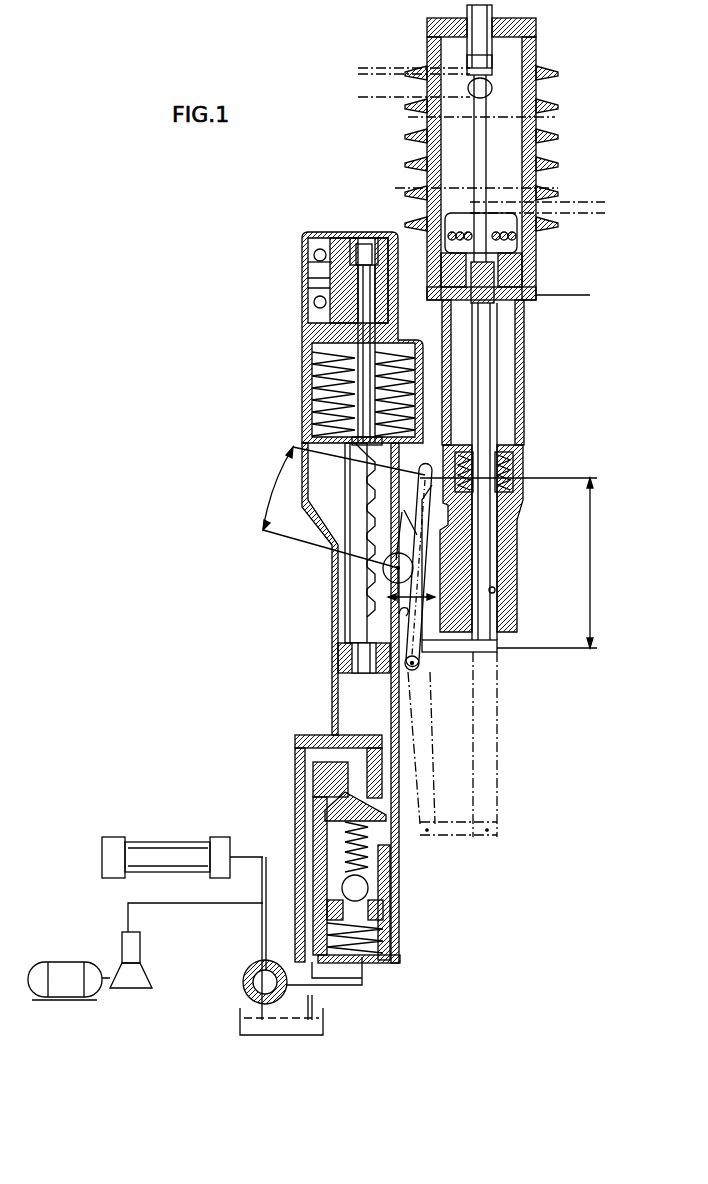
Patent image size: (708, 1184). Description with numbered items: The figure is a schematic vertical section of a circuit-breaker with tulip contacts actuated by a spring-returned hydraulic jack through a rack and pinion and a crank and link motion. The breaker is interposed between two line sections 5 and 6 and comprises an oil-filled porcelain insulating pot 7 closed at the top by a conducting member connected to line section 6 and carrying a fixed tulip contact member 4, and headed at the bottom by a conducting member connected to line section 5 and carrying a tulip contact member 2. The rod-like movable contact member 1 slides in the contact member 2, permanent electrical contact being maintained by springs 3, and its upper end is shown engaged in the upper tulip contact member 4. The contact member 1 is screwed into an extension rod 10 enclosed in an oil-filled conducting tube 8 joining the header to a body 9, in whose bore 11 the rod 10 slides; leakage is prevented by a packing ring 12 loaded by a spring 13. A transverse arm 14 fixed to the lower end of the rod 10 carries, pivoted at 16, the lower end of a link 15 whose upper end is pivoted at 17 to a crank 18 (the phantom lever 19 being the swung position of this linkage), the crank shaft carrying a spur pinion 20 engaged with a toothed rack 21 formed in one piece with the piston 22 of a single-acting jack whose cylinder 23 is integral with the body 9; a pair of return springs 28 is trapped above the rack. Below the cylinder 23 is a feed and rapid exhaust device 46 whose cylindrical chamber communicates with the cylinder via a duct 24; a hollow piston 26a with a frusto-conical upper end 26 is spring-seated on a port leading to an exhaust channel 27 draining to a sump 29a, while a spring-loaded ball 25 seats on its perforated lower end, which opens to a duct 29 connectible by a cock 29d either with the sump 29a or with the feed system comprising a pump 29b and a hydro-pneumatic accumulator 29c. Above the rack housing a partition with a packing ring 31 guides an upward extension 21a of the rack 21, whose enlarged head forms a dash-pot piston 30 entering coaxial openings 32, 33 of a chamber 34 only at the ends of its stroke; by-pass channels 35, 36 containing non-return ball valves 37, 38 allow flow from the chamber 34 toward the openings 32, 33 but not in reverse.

The movable contact member 1 is at (484, 178).
The tulip contact member 2 is at (512, 258).
The springs 3 is at (450, 238).
The fixed tulip contact member 4 is at (490, 92).
The line section 5 is at (574, 300).
The line section 6 is at (492, 12).
The insulating pot 7 is at (430, 143).
The conducting tube 8 is at (524, 392).
The body 9 is at (519, 566).
The extension rod 10 is at (481, 396).
The bore 11 is at (496, 590).
The packing ring 12 is at (506, 490).
The spring 13 is at (506, 470).
The arm 14 is at (452, 652).
The link 15 is at (430, 570).
The pivot 16 is at (420, 668).
The pivot 17 is at (423, 556).
The crank 18 is at (405, 512).
The lever (phantom) 19 is at (458, 824).
The spur pinion 20 is at (395, 553).
The toothed rack 21 is at (356, 488).
The upward extension 21a is at (387, 456).
The piston 22 is at (340, 652).
The cylinder 23 is at (334, 704).
The duct 24 is at (399, 763).
The spring-loaded ball 25 is at (368, 890).
The upper end of piston 26 is at (386, 800).
The hollow piston 26a is at (390, 870).
The exhaust channel 27 is at (306, 797).
The return springs 28 is at (324, 368).
The duct 29 is at (365, 978).
The sump 29a is at (310, 1030).
The pump 29b is at (146, 975).
The hydro-pneumatic accumulator 29c is at (152, 855).
The cock 29d is at (246, 976).
The piston 30 is at (369, 242).
The packing ring 31 is at (310, 343).
The cylindrical opening 32 is at (356, 242).
The cylindrical opening 33 is at (380, 321).
The chamber 34 is at (385, 274).
The by-pass channel 35 is at (314, 270).
The by-pass channel 36 is at (310, 296).
The non-return ball valve 37 is at (316, 250).
The non-return ball valve 38 is at (314, 308).
The feed and rapid exhaust device 46 is at (296, 742).